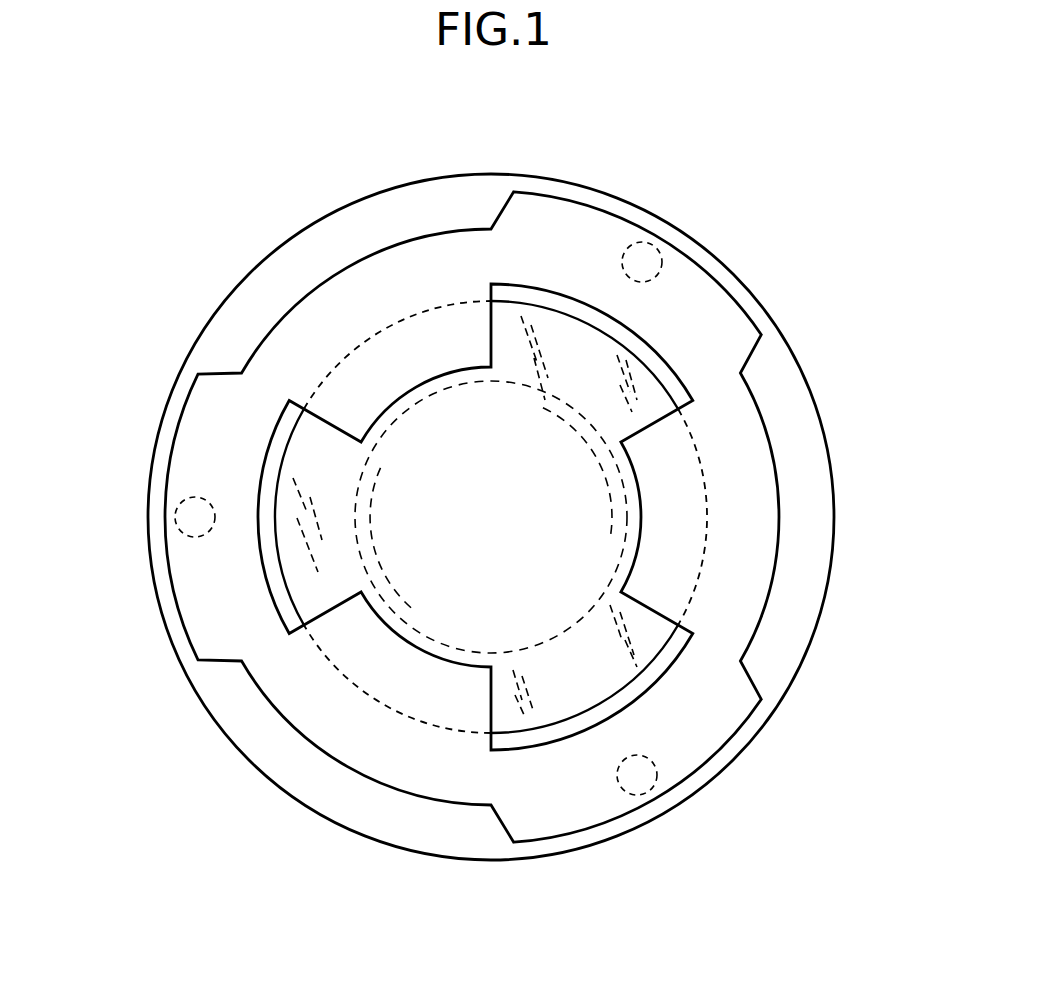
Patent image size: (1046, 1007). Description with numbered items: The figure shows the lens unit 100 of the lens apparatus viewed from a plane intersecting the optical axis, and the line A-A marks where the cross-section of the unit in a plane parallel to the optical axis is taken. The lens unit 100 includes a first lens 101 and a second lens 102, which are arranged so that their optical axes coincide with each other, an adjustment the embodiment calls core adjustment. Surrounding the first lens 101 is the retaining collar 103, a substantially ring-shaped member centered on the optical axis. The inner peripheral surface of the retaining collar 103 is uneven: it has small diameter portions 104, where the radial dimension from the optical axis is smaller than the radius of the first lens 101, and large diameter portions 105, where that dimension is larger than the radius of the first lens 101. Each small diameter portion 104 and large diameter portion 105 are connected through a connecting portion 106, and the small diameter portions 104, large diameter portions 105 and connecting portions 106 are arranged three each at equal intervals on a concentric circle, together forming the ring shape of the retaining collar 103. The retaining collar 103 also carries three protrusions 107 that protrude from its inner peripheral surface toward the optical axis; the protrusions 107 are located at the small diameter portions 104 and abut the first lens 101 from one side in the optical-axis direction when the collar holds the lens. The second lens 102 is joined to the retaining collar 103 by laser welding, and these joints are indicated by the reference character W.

The lens unit 100 is at (632, 107).
The first lens 101 is at (513, 317).
The second lens 102 is at (427, 192).
The retaining collar 103 is at (247, 682).
The small diameter portion 104 is at (405, 325).
The large diameter portion 105 is at (652, 357).
The connecting portion 106 is at (470, 785).
The protrusion 107 is at (355, 368).
The laser welding joint W is at (641, 240).
The line A- A is at (72, 517).